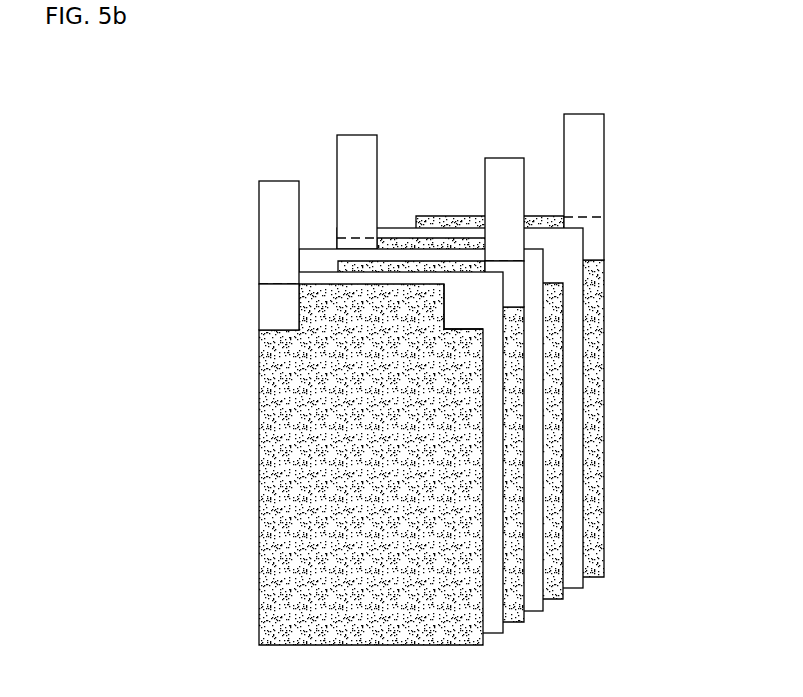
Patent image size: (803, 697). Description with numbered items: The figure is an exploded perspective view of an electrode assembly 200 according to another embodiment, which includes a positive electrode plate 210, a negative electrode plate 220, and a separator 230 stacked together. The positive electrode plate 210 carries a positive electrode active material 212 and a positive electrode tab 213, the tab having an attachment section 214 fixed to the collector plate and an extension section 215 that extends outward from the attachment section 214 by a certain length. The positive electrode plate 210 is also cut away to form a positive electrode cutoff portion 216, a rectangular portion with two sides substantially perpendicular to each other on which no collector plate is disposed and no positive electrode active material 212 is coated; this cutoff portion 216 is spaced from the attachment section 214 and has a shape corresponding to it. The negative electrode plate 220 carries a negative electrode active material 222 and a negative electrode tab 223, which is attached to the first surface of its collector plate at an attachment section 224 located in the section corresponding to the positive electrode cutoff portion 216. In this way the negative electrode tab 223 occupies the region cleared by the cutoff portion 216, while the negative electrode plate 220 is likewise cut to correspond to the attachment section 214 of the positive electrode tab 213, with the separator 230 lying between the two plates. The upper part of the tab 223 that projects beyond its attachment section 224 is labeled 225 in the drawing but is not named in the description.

The electrode assembly 200 is at (640, 102).
The positive electrode plate 210 is at (250, 534).
The positive electrode active material 212 is at (258, 451).
The positive electrode tab 213 is at (191, 221).
The attachment section 214 is at (258, 295).
The extension section 215 is at (258, 225).
The positive electrode cutoff portion 216 is at (463, 319).
The negative electrode plate 220 is at (530, 423).
The negative electrode active material 222 is at (513, 376).
The negative electrode tab 223 is at (678, 186).
The attachment section 224 is at (515, 283).
The second electrode tab 225 is at (513, 191).
The separator 230 is at (512, 474).